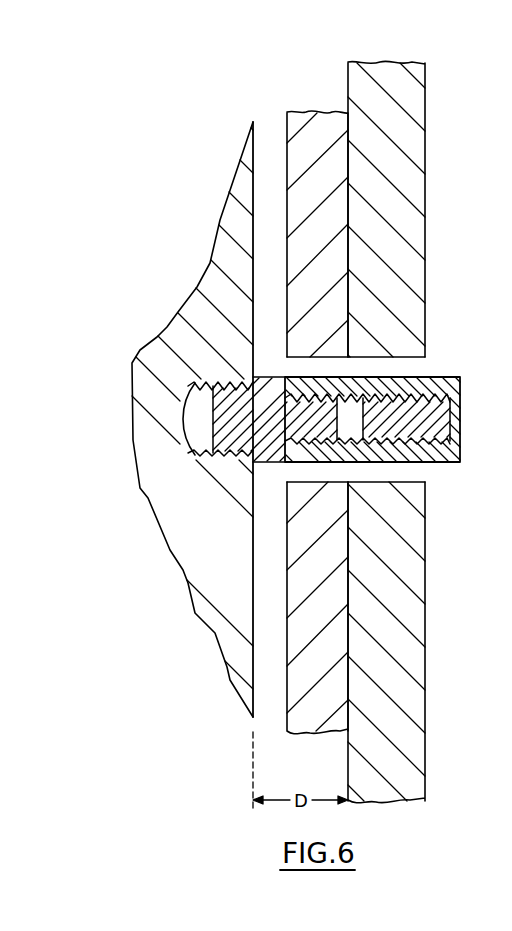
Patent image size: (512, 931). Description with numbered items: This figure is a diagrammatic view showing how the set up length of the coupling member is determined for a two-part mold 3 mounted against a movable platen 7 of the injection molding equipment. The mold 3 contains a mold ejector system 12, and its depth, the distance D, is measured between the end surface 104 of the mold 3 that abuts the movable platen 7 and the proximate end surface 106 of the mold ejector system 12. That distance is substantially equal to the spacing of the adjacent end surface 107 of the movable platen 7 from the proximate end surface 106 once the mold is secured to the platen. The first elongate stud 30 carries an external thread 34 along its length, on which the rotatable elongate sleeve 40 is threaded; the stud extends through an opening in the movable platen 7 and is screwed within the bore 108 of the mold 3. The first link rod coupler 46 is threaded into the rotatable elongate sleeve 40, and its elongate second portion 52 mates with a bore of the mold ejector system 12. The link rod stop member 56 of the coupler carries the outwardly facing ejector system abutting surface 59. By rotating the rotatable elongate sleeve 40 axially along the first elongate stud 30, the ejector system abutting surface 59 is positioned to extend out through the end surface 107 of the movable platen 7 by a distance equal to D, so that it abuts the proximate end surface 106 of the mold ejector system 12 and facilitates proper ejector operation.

The mold 3 is at (322, 112).
The movable platen 7 is at (389, 65).
The mold ejector system 12 is at (240, 198).
The first elongate stud 30 is at (385, 438).
The external thread 34 is at (461, 413).
The rotatable elongate sleeve 40 is at (436, 380).
The first link rod coupler 46 is at (235, 437).
The elongate second portion 52 is at (217, 405).
The link rod stop member 56 is at (272, 462).
The ejector system abutting surface 59 is at (250, 470).
The end surface of the mold 104 is at (350, 690).
The proximate end surface of the mold ejector system 106 is at (251, 676).
The end surface of the movable platen 107 is at (348, 634).
The bore of the mold 108 is at (248, 378).